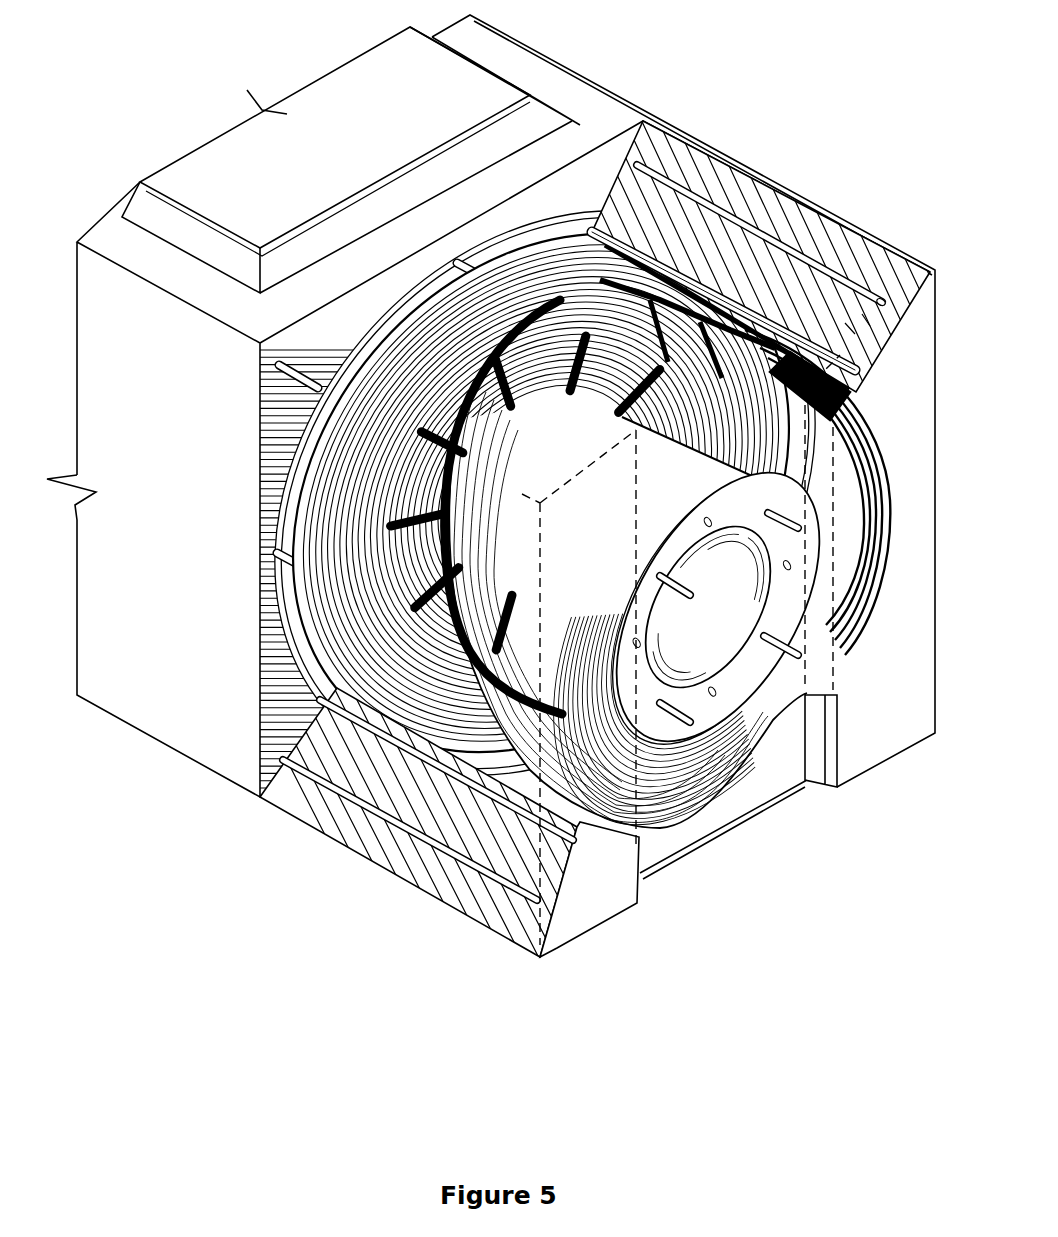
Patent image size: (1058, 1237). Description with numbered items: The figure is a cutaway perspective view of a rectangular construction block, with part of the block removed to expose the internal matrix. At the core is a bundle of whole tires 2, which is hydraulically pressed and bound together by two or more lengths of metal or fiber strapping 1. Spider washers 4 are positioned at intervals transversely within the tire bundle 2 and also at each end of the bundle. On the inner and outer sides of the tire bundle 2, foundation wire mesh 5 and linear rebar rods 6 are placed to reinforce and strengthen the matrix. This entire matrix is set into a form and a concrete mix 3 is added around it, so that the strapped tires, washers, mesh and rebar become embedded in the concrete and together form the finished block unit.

The metal or fiber strapping 1 is at (493, 640).
The whole tires 2 is at (598, 224).
The concrete mix 3 is at (575, 468).
The spider washers 4 is at (723, 352).
The foundation wire mesh 5 is at (780, 302).
The linear rebar rods 6 is at (880, 305).